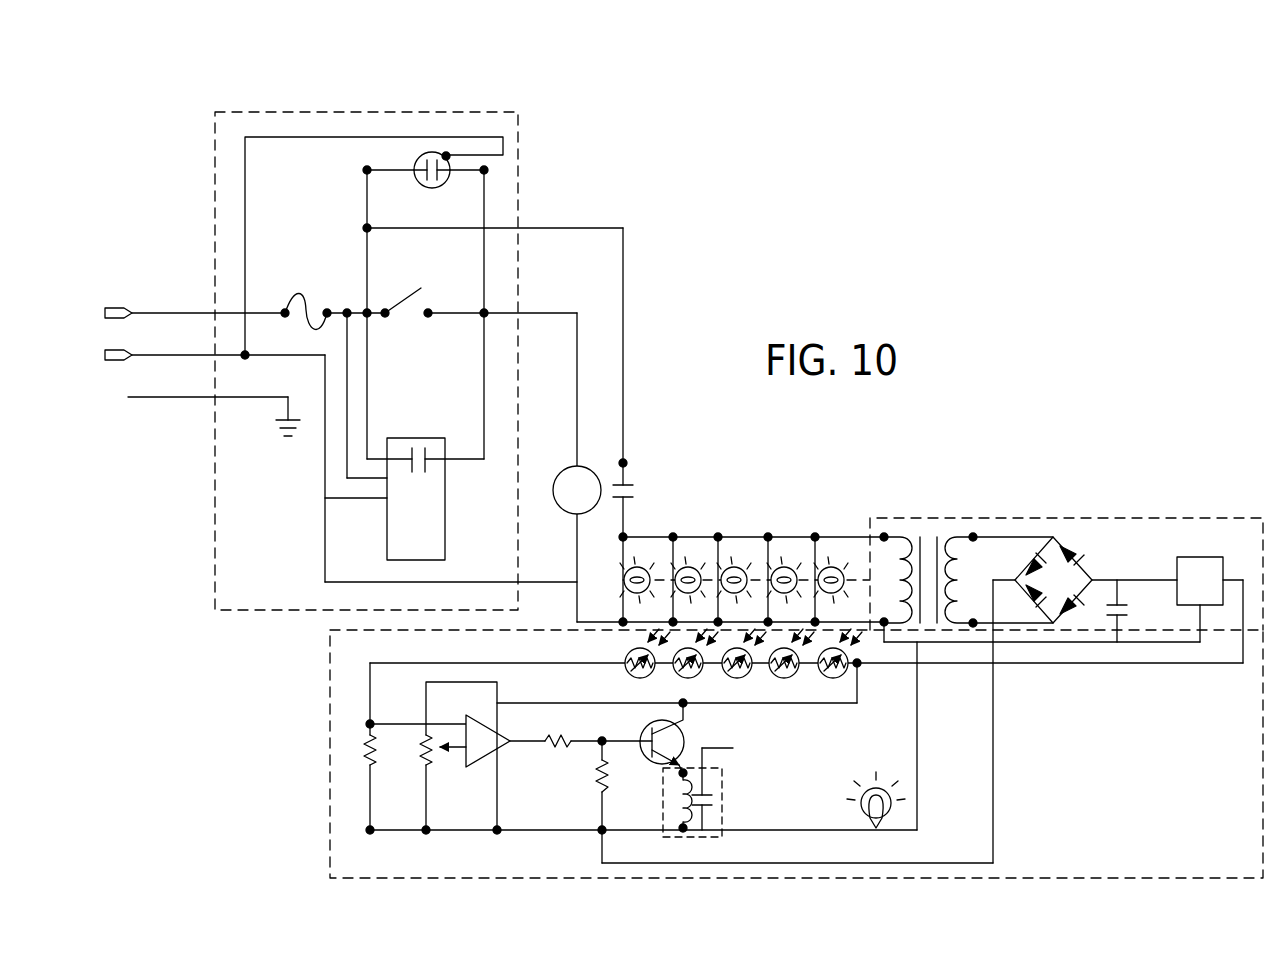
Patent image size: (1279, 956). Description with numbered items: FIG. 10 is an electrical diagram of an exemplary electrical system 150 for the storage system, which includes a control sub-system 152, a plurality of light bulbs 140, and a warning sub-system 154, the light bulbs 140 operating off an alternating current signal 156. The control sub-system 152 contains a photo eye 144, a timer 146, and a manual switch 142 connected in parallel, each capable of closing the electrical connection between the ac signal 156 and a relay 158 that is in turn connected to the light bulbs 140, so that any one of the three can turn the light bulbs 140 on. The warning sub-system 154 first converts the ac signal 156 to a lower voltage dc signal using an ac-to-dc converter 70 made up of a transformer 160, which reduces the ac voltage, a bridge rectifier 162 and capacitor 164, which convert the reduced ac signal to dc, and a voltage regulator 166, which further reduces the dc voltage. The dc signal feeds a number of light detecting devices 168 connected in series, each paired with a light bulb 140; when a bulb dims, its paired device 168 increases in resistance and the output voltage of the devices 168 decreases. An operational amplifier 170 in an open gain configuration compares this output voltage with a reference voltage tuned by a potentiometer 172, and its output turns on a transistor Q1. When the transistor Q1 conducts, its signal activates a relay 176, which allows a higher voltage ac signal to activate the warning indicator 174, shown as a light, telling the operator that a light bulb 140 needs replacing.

The electrical system 150 is at (163, 172).
The control sub-system 152 is at (520, 186).
The photo eye 144 is at (424, 190).
The manual switch 142 is at (422, 306).
The timer 146 is at (420, 438).
The alternating current signal 156 is at (112, 309).
The relay 158 is at (591, 470).
The light bulbs 140 is at (832, 568).
The transformer 160 is at (928, 548).
The bridge rectifier 162 is at (1062, 550).
The capacitor 164 is at (1122, 612).
The voltage regulator 166 is at (1190, 557).
The power supply circuit 70 is at (1200, 518).
The warning sub-system 154 is at (329, 732).
The operational amplifier 170 is at (492, 738).
The variable resistance potentiometer 172 is at (436, 758).
The transistor Q1 is at (680, 738).
The light detecting devices 168 is at (640, 678).
The warning indicator 174 is at (876, 813).
The relay 176 is at (722, 806).